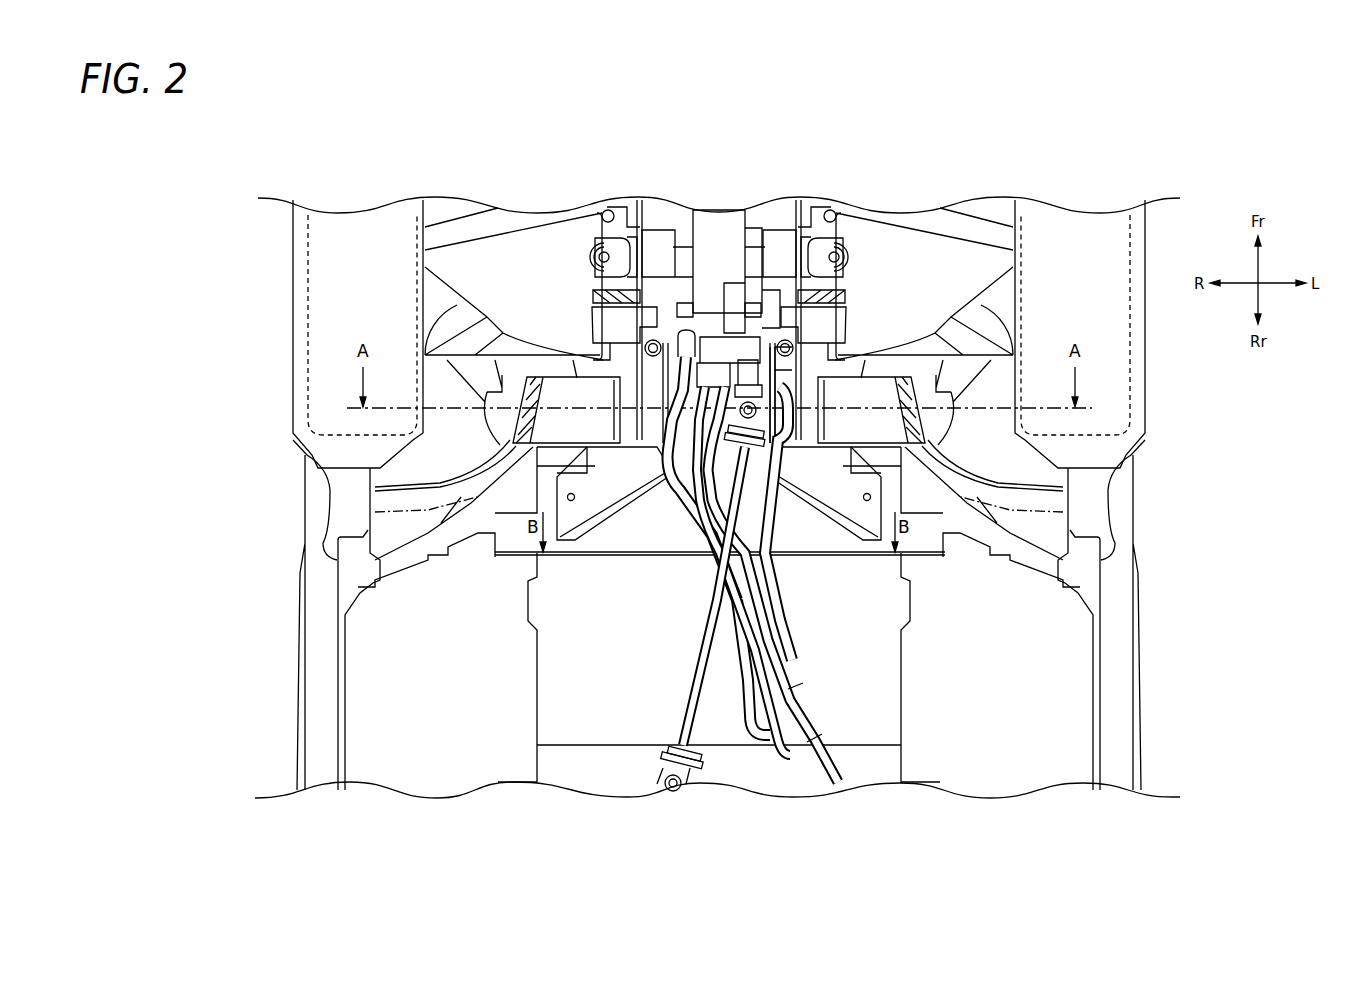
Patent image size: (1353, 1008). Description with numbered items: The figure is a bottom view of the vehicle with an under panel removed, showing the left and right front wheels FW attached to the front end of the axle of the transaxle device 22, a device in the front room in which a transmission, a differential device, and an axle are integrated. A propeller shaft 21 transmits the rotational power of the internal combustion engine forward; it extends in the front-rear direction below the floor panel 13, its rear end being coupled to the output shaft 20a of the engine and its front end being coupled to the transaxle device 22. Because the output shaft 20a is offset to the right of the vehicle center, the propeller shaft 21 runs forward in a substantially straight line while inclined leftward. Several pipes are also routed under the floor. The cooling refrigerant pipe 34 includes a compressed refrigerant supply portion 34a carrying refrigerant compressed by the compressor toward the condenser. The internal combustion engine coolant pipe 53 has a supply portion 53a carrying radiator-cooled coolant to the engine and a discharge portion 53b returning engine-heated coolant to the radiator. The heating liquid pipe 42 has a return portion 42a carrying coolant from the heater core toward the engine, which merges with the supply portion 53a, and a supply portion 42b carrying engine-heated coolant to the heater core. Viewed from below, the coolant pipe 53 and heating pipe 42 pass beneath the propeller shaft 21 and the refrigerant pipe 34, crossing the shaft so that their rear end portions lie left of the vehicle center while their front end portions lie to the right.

The front wheel FW is at (361, 232).
The floor panel 13 is at (857, 693).
The transaxle device 22 is at (756, 278).
The propeller shaft 21 is at (684, 612).
The output shaft 20a is at (673, 792).
The heating liquid pipe 42 is at (687, 532).
The return portion 42a is at (676, 480).
The supply portion 42b is at (702, 574).
The internal combustion engine coolant pipe 53 is at (858, 625).
The supply portion 53a is at (763, 662).
The discharge portion 53b is at (782, 637).
The cooling refrigerant pipe 34 is at (892, 523).
The compressed refrigerant supply portion 34a is at (780, 582).